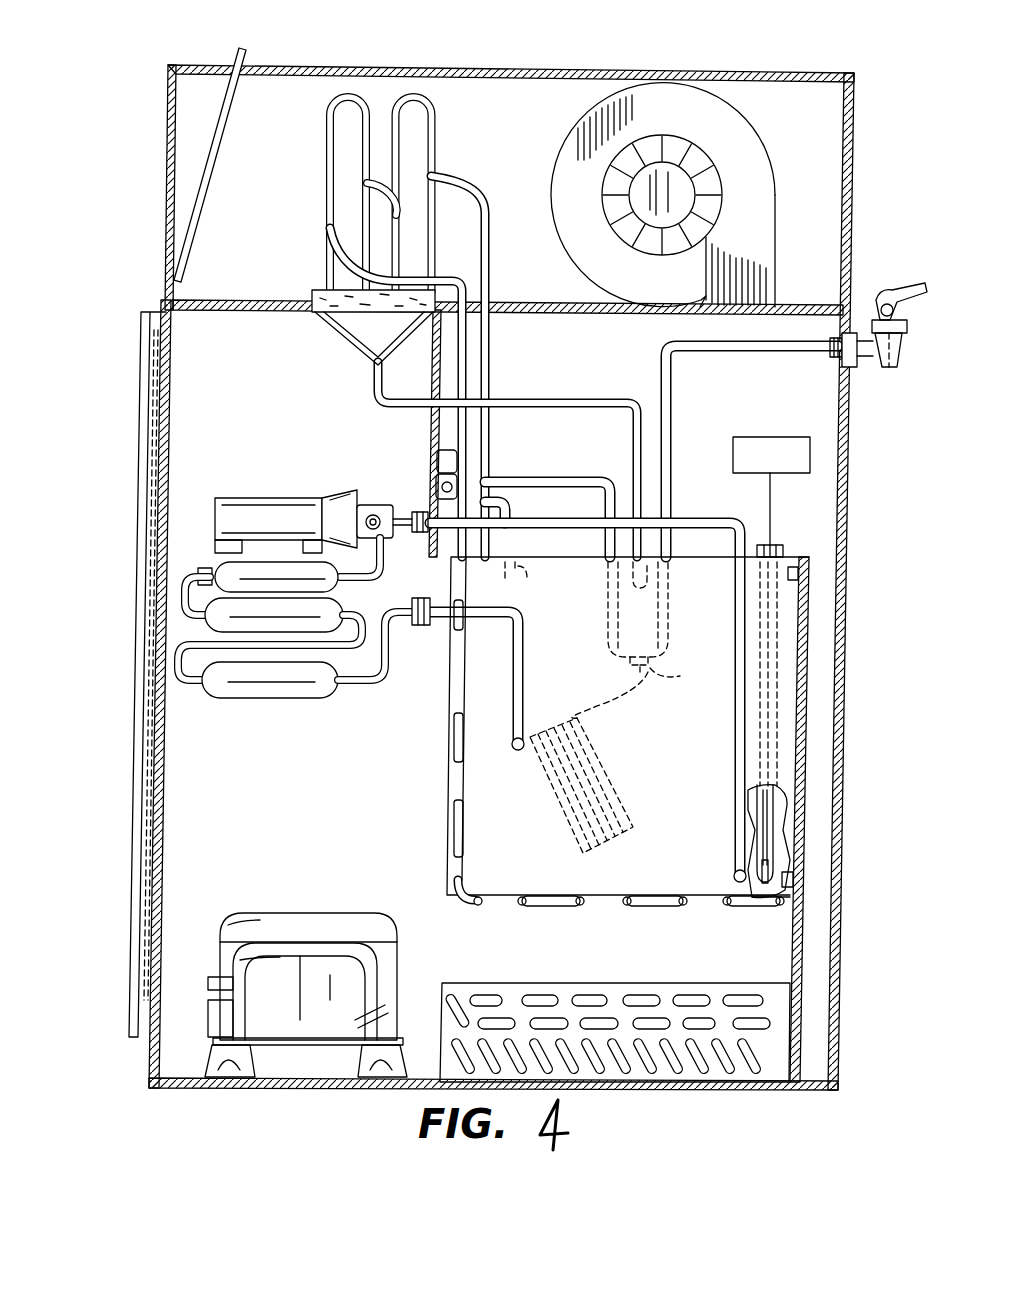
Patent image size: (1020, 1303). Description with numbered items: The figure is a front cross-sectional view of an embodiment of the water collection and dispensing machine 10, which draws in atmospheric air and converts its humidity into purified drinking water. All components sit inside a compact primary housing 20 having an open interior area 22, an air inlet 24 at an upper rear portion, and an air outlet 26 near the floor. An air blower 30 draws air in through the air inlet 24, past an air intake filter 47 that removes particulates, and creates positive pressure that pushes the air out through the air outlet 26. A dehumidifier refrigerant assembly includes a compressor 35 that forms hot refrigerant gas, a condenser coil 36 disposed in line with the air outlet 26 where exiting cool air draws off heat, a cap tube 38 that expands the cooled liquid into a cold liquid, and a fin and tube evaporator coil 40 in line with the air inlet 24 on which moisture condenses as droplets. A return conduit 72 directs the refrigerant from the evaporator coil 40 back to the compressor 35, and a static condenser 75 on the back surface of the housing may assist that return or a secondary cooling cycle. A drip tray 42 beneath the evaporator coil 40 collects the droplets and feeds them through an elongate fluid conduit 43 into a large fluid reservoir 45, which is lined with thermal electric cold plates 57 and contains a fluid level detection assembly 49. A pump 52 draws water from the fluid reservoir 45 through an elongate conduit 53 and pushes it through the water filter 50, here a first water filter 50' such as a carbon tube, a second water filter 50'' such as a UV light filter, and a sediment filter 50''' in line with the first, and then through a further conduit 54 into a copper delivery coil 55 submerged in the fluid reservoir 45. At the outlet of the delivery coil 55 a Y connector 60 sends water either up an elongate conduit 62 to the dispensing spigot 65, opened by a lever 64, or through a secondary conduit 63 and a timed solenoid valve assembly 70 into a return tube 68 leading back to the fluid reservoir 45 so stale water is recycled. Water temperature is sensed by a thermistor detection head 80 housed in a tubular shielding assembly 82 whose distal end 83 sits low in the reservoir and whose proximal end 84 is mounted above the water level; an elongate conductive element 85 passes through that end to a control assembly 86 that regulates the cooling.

The water collection and dispensing machine 10 is at (485, 583).
The primary housing 20 is at (513, 592).
The interior area 22 is at (572, 338).
The air inlet 24 is at (170, 178).
The air outlet 26 is at (603, 1097).
The air blower 30 is at (745, 150).
The compressor 35 is at (220, 950).
The condenser coil 36 is at (790, 1018).
The cap tube 38 is at (489, 372).
The evaporator coil 40 is at (437, 107).
The drip tray 42 is at (348, 335).
The elongate fluid conduit 43 is at (592, 372).
The fluid reservoir 45 is at (805, 620).
The air intake filter 47 is at (205, 195).
The fluid level detection assembly 49 is at (793, 567).
The water filter 50 is at (208, 670).
The sediment filter 50''' is at (216, 565).
The first water filter 50' is at (197, 628).
The second water filter 50'' is at (199, 708).
The pump 52 is at (277, 497).
The elongate conduit 53 is at (742, 632).
The conduit 54 is at (437, 640).
The delivery coil 55 is at (627, 781).
The thermal electric cold plates 57 is at (448, 810).
The Y connector 60 is at (638, 640).
The elongate conduit 62 is at (674, 455).
The secondary conduit 63 is at (533, 455).
The lever 64 is at (893, 293).
The dispensing spigot 65 is at (893, 372).
The return tube 68 is at (535, 582).
The valve assembly 70 is at (437, 458).
The return conduit 72 is at (473, 332).
The refrigerant system static condenser 75 is at (138, 528).
The detection head 80 is at (770, 866).
The shielding assembly 82 is at (783, 843).
The distal end 83 is at (775, 893).
The proximal end 84 is at (776, 545).
The elongate conductive element 85 is at (760, 830).
The control assembly 86 is at (771, 491).